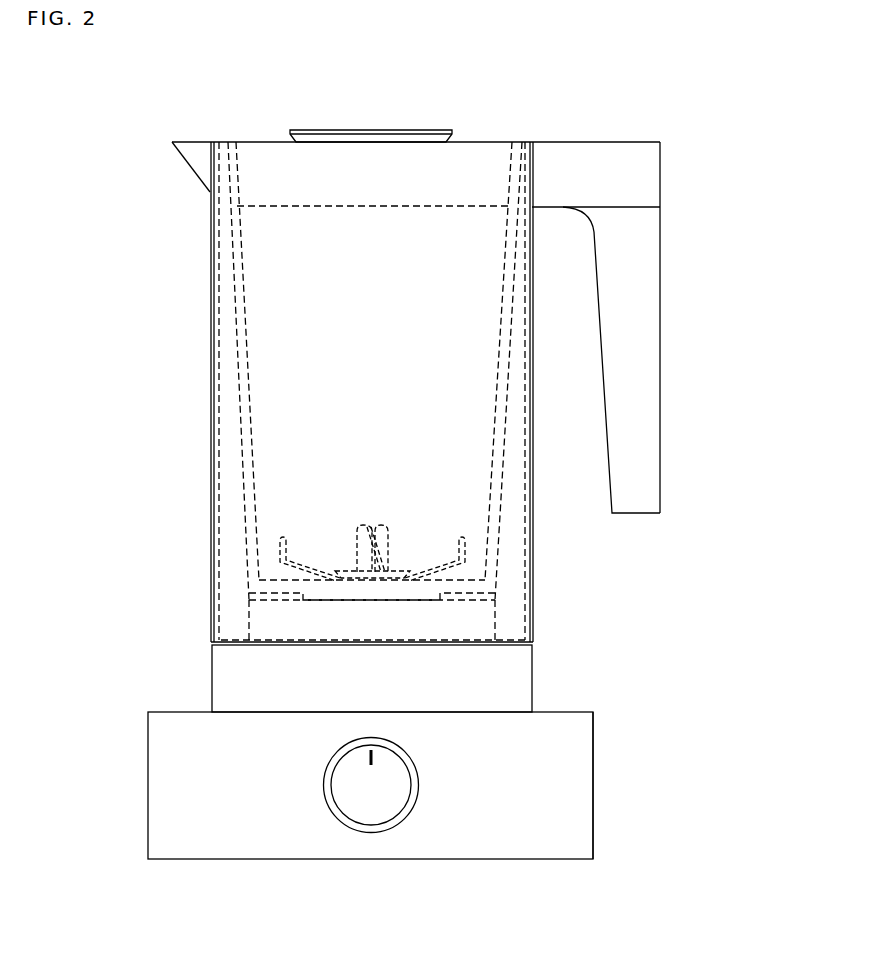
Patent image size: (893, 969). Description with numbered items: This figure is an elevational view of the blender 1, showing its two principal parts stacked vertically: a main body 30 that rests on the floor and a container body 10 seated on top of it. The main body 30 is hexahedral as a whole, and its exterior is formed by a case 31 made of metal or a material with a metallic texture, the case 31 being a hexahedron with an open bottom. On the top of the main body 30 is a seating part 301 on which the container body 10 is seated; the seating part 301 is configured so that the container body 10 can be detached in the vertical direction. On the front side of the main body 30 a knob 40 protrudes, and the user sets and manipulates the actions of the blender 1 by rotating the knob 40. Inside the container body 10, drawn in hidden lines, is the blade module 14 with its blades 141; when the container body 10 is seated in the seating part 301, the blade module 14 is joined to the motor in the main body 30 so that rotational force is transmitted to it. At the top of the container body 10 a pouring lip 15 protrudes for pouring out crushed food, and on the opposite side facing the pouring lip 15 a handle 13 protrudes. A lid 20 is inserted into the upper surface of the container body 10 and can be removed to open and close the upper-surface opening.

The blender 1 is at (136, 112).
The container body 10 is at (196, 428).
The handle 13 is at (683, 331).
The blade module 14 is at (338, 521).
The blade 141 is at (278, 550).
The pouring lip 15 is at (186, 163).
The lid 20 is at (443, 120).
The main body 30 is at (133, 785).
The seating part 301 is at (228, 686).
The case 31 is at (541, 782).
The knob 40 is at (345, 838).